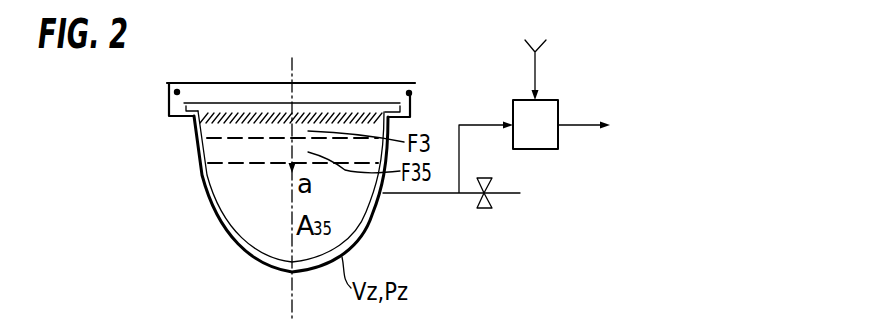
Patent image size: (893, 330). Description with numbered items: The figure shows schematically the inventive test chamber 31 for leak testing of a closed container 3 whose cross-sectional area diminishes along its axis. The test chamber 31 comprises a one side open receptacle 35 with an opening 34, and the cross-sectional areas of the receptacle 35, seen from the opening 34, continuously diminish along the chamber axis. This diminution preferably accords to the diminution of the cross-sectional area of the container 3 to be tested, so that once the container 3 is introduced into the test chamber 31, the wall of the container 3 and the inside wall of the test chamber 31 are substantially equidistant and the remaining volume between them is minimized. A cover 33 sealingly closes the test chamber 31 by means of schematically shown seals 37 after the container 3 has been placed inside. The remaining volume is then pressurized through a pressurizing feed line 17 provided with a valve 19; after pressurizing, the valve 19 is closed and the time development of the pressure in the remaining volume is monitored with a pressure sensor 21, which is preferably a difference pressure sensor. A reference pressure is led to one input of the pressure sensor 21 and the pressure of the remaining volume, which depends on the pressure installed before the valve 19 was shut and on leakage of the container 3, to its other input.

The container 3 is at (242, 240).
The test chamber 31 is at (368, 238).
The cover 33 is at (318, 83).
The opening 34 is at (238, 88).
The receptacle 35 is at (218, 220).
The seals 37 is at (175, 92).
The pressurizing feed line 17 is at (505, 193).
The valve 19 is at (484, 210).
The pressure sensor 21 is at (549, 99).